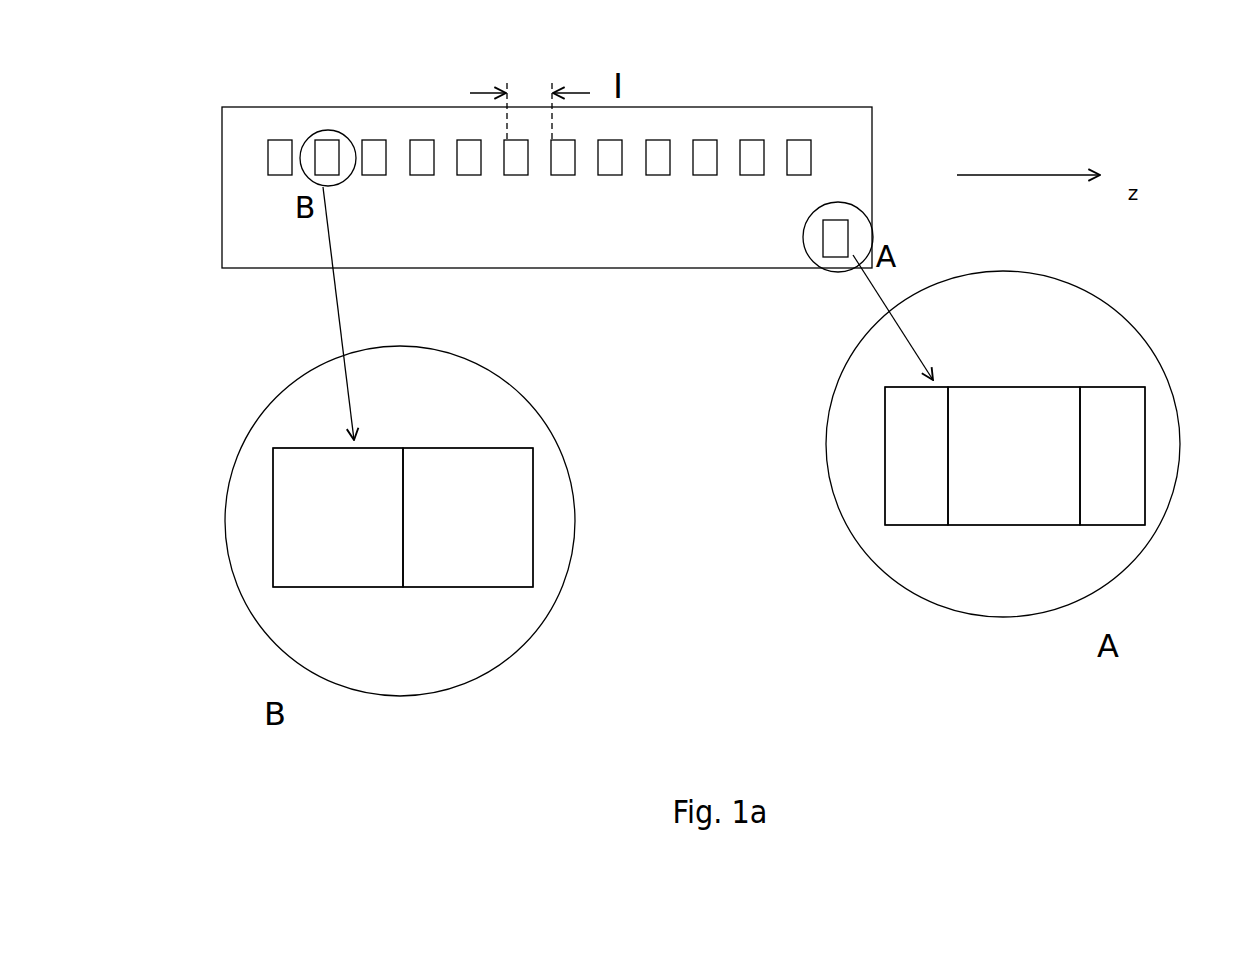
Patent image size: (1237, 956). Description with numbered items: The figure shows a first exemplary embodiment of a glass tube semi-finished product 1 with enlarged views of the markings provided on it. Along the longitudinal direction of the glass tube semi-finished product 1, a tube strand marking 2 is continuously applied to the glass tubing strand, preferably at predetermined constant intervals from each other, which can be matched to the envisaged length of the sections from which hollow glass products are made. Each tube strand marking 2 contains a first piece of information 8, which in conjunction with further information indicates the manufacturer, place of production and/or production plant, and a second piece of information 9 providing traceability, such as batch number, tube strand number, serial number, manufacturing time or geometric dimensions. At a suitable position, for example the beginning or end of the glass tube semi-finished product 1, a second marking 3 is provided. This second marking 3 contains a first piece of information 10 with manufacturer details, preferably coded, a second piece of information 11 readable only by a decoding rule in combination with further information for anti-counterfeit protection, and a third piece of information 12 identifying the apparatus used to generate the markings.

The glass tube semi-finished product 1 is at (872, 130).
The tube strand marking 2 is at (330, 157).
The second marking 3 is at (832, 243).
The first piece of information 8 is at (323, 567).
The second piece of information 9 is at (488, 567).
The first piece of information 10 is at (913, 508).
The second piece of information 11 is at (1018, 508).
The third piece of information 12 is at (1108, 508).